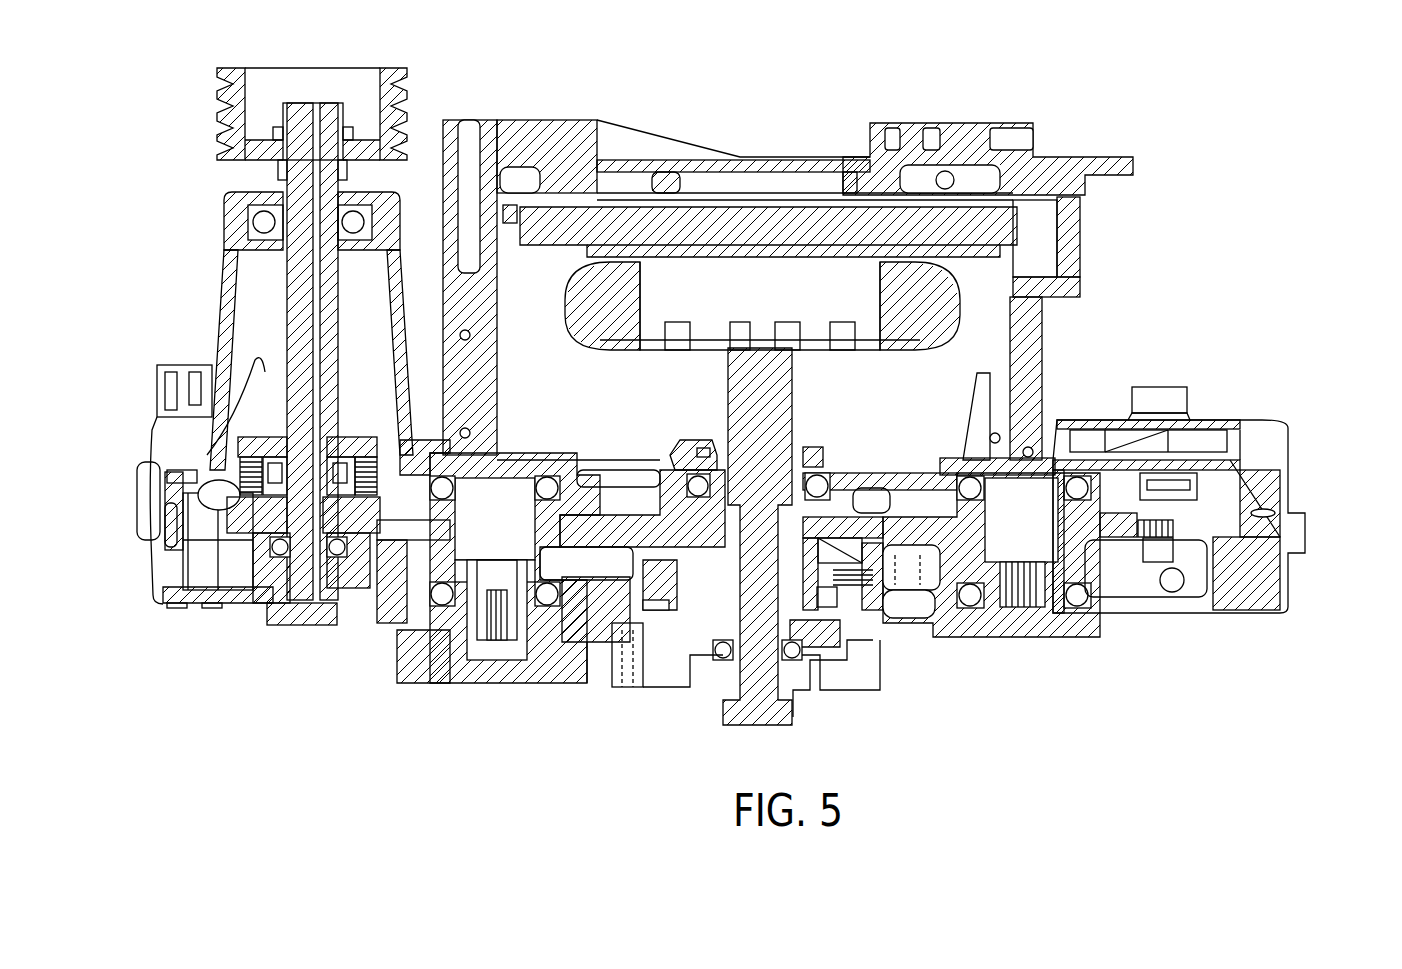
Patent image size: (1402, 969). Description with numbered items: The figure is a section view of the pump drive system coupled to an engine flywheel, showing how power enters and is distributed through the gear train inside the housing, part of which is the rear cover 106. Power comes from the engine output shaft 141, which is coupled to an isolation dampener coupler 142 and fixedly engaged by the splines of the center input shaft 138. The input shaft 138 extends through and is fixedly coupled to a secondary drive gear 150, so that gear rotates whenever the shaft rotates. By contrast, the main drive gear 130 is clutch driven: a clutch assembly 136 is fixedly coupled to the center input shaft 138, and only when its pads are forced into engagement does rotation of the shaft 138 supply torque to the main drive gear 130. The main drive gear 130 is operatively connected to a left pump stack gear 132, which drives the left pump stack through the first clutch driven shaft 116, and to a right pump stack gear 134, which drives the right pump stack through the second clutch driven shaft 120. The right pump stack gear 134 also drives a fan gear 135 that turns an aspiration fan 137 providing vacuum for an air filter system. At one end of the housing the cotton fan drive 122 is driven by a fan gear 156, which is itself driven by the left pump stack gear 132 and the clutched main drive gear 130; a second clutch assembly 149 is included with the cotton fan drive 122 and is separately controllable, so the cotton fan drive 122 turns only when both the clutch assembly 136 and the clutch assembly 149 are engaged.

The rear cover 106 is at (1265, 605).
The first clutch driven shaft 116 is at (492, 655).
The second clutch driven shaft 120 is at (1023, 605).
The cotton fan drive 122 is at (247, 513).
The main drive gear 130 is at (623, 530).
The left pump stack gear 132 is at (415, 537).
The right pump stack gear 134 is at (1095, 545).
The fan gear 135 is at (1163, 550).
The clutch assembly 136 is at (852, 584).
The aspiration fan 137 is at (1292, 412).
The center input shaft 138 is at (735, 600).
The output shaft 141 is at (762, 385).
The isolation dampener coupler 142 is at (853, 315).
The second clutch assembly 149 is at (240, 473).
The secondary drive gear 150 is at (805, 618).
The fan gear 156 is at (365, 535).